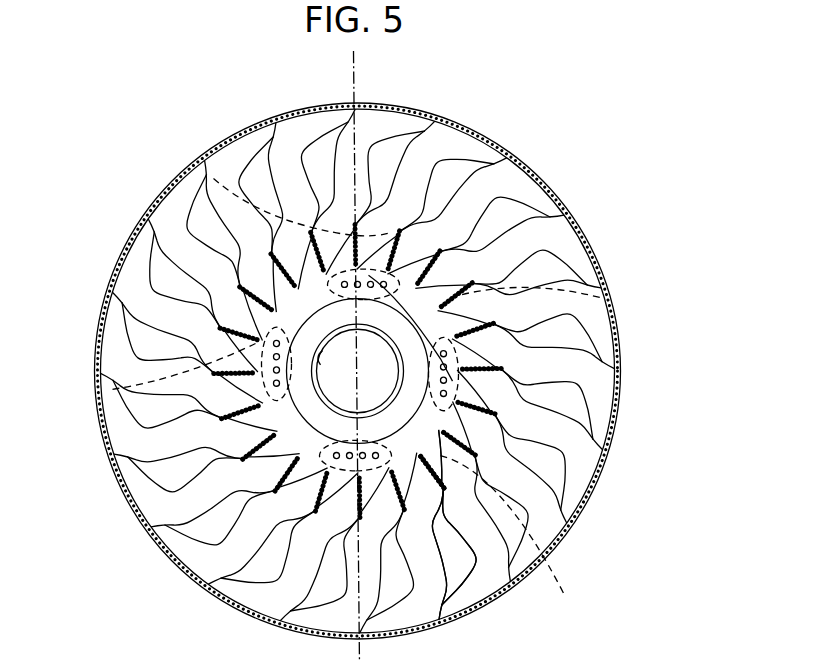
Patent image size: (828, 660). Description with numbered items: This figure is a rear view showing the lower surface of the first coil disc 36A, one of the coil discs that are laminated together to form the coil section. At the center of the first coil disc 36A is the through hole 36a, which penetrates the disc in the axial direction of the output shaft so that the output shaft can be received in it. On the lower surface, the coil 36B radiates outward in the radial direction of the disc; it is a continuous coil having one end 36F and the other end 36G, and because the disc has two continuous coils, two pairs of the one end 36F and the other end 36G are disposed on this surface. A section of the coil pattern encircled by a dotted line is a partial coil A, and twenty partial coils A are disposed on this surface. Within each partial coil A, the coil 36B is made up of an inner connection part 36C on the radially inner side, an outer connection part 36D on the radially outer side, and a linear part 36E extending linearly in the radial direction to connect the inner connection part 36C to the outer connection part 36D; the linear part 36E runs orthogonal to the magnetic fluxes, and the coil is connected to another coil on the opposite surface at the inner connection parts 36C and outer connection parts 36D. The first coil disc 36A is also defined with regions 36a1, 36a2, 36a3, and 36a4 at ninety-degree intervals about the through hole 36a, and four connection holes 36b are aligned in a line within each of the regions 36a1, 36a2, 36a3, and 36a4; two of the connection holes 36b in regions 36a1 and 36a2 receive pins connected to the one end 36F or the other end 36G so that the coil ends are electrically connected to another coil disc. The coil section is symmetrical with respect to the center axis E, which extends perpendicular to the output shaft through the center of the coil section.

The first coil disc 36A is at (488, 106).
The through hole 36a is at (326, 342).
The region 36a1 is at (215, 170).
The region 36a2 is at (470, 430).
The region 36a3 is at (473, 524).
The region 36a4 is at (100, 374).
The connection hole 36b is at (352, 283).
The coil 36B is at (418, 180).
The inner connection part 36C is at (450, 267).
The outer connection part 36D is at (603, 263).
The linear part 36E is at (533, 240).
The one end 36F is at (443, 385).
The other end 36G is at (444, 397).
The partial coil A is at (600, 340).
The center axis E is at (354, 120).